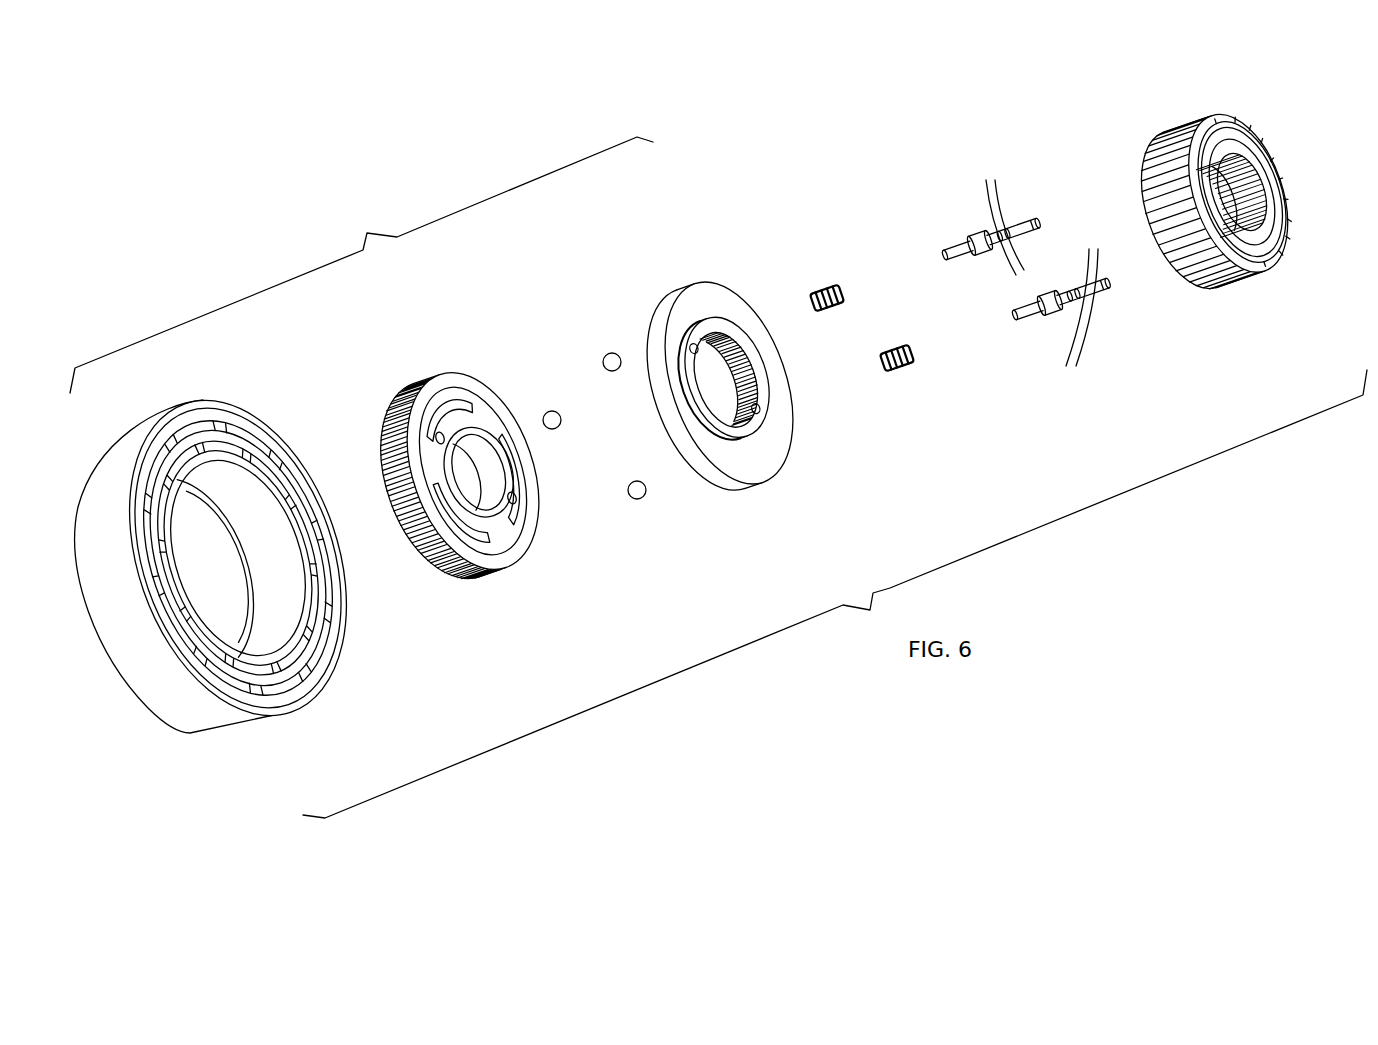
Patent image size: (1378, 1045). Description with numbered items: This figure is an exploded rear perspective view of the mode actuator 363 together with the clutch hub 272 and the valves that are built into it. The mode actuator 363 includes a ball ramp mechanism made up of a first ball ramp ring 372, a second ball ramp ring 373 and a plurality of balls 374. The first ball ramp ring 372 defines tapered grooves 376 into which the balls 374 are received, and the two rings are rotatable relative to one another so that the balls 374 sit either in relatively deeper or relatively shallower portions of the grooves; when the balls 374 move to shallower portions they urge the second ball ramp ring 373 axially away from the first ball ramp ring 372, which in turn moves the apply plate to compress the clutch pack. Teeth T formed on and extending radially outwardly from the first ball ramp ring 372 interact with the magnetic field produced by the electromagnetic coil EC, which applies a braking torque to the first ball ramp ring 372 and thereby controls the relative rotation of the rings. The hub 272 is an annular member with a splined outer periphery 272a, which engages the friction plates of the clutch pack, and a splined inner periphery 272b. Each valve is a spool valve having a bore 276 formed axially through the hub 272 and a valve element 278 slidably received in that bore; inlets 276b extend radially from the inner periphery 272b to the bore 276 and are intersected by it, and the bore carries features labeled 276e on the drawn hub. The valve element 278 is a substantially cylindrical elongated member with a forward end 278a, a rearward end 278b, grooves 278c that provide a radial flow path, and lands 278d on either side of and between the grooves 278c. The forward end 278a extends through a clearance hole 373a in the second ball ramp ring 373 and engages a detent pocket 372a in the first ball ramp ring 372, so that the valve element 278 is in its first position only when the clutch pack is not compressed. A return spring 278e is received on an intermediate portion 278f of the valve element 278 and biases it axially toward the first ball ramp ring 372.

The mode actuator 363 is at (718, 477).
The electromagnetic coil EC is at (180, 712).
The first ball ramp ring 372 is at (450, 362).
The detent pockets 372a is at (444, 434).
The tapered grooves 376 is at (423, 437).
The balls 374 is at (617, 371).
The teeth T is at (408, 532).
The second ball ramp ring 373 is at (748, 483).
The clearance hole 373a is at (690, 338).
The valve element 278 is at (1013, 274).
The forward end 278a is at (947, 257).
The rearward end 278b is at (1027, 215).
The grooves 278c is at (1040, 228).
The lands 278d is at (1043, 287).
The return spring 278e is at (825, 288).
The intermediate portion 278f is at (974, 234).
The hub 272 is at (1185, 204).
The splined outer periphery 272a is at (1212, 270).
The splined inner periphery 272b is at (1245, 165).
The bore 276 is at (1208, 155).
The inlets 276b is at (1262, 200).
The ring tabs 276e is at (1280, 258).